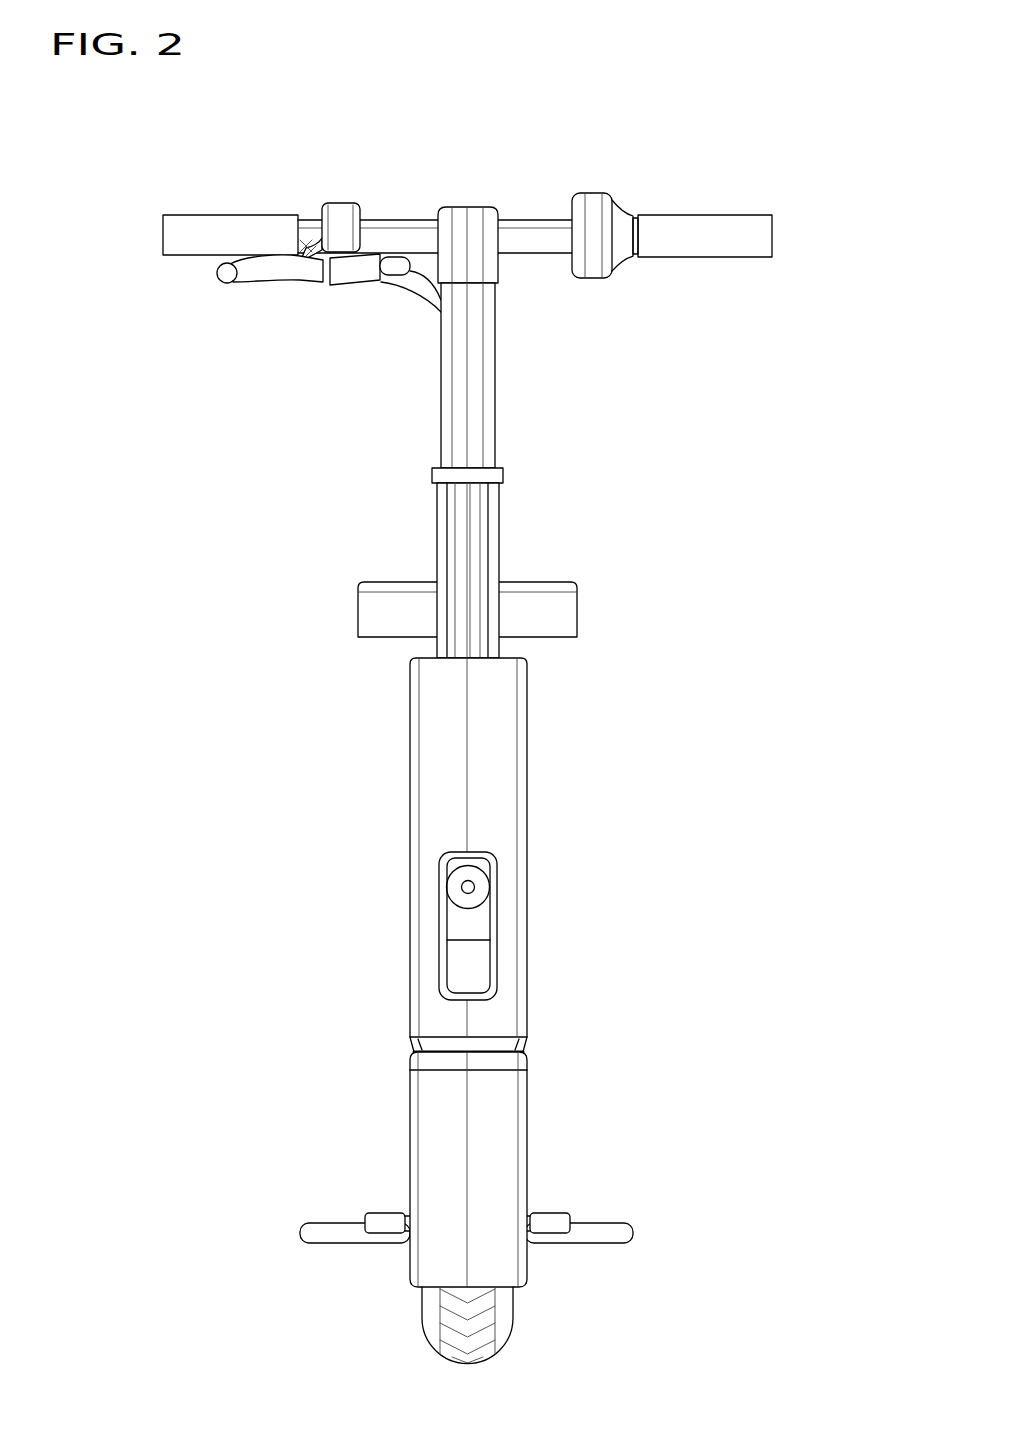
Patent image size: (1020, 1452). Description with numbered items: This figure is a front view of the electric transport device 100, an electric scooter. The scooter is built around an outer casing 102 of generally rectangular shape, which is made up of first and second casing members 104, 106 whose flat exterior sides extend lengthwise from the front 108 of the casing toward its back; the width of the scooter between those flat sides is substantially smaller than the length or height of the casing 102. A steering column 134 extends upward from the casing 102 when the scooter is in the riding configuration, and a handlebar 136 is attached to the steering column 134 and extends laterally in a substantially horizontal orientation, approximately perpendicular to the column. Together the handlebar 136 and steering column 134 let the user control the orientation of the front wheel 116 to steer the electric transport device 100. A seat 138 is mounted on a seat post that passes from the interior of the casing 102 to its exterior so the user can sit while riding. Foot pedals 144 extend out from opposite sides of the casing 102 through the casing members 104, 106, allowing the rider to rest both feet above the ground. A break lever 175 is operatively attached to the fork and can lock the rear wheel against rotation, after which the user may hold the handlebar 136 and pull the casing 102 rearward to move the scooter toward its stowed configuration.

The electric transport device 100 is at (814, 92).
The outer casing 102 is at (395, 909).
The first casing member 104 is at (527, 1130).
The second casing member 106 is at (408, 842).
The front 108 is at (467, 755).
The front wheel 116 is at (435, 1338).
The steering column 134 is at (467, 398).
The handlebar 136 is at (400, 223).
The seat 138 is at (367, 612).
The foot pedals 144 is at (322, 1228).
The break lever 175 is at (277, 267).